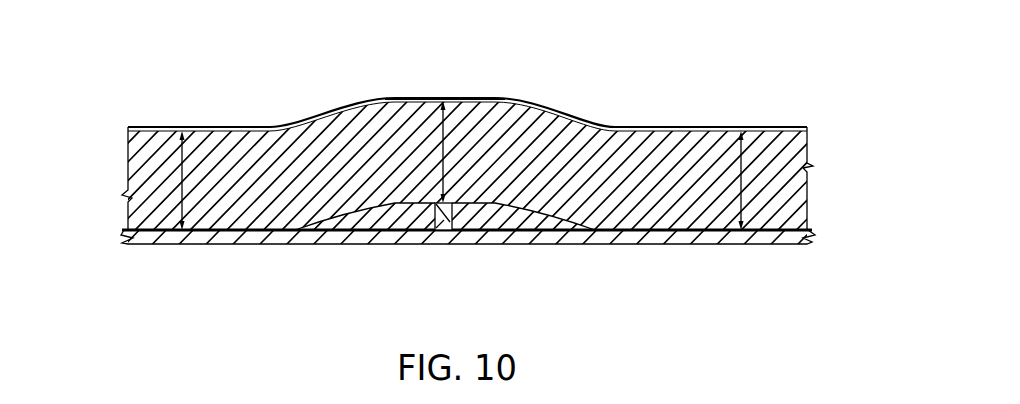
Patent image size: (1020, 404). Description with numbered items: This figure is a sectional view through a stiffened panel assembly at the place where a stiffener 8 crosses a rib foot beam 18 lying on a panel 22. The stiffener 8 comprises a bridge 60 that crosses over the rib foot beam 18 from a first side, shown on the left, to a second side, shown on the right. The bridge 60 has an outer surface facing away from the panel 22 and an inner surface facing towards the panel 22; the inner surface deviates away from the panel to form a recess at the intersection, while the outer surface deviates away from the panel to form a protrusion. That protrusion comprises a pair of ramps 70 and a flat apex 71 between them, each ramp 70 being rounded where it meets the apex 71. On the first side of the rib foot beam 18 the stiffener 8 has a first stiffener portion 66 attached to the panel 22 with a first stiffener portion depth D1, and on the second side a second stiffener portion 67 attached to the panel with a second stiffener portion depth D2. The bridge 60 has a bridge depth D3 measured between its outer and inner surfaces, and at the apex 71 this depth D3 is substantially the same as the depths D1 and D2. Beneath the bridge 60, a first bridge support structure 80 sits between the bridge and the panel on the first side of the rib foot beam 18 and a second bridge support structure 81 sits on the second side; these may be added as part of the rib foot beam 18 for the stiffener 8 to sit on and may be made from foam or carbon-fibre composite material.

The stiffener 8 is at (674, 106).
The rib foot beam 18 is at (446, 226).
The panel 22 is at (245, 245).
The bridge 60 is at (428, 122).
The first stiffener portion 66 is at (126, 158).
The second stiffener portion 67 is at (807, 181).
The ramp 70 is at (318, 115).
The apex 71 is at (376, 97).
The first bridge support structure 80 is at (358, 225).
The second bridge support structure 81 is at (474, 222).
The first stiffener portion depth D1 is at (185, 170).
The second stiffener portion depth D2 is at (744, 170).
The bridge depth D3 is at (461, 126).